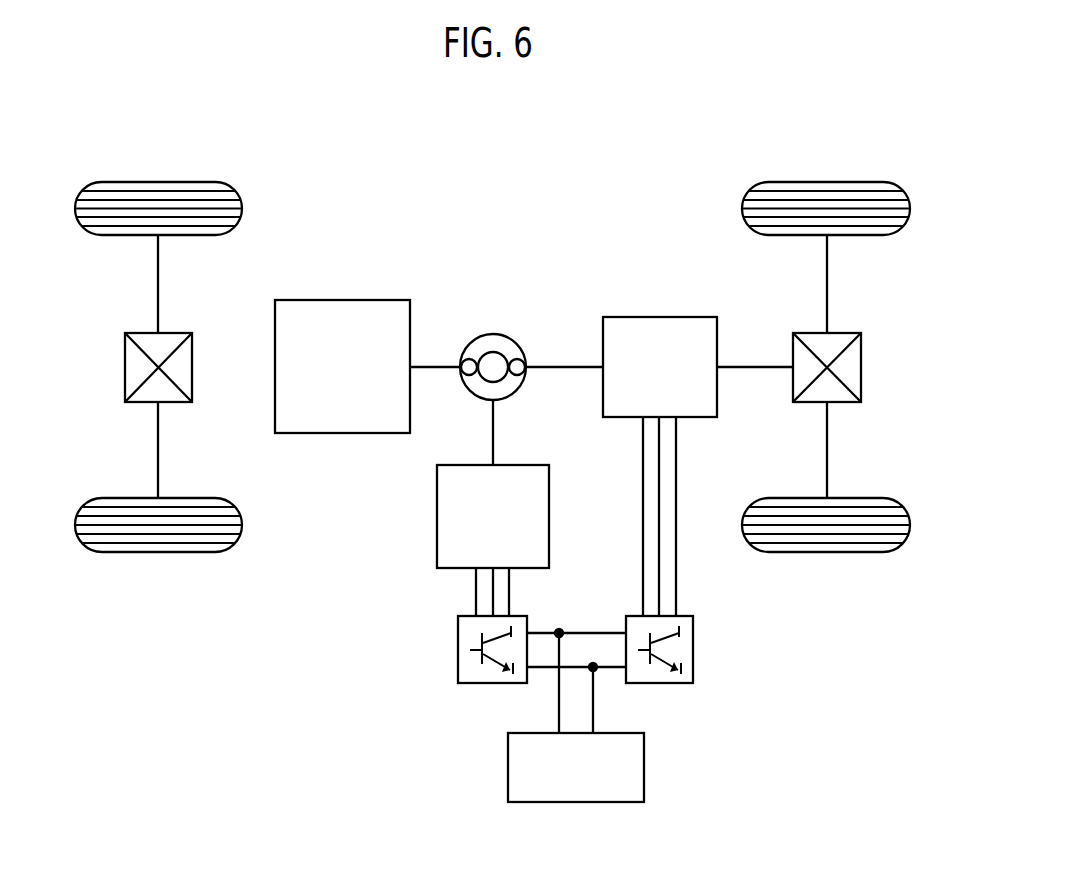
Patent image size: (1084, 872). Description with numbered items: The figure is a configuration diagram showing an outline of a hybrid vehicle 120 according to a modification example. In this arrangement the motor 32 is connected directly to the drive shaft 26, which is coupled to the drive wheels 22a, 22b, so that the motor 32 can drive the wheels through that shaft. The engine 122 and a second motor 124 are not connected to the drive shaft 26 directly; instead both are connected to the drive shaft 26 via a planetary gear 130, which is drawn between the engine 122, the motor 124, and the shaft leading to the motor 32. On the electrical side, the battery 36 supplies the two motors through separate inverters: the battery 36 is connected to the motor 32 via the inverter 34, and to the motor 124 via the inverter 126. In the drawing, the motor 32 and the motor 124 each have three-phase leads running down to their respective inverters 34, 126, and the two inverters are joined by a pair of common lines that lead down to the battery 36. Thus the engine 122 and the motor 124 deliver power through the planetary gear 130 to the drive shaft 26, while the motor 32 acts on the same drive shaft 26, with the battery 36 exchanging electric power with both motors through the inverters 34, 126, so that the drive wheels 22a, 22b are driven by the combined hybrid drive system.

The hybrid vehicle 120 is at (626, 149).
The engine 122 is at (340, 297).
The planetary gear 130 is at (494, 333).
The motor 32 is at (659, 315).
The drive shaft 26 is at (742, 363).
The drive wheel 22a is at (827, 180).
The drive wheel 22b is at (826, 555).
The motor 124 is at (437, 516).
The inverter 126 is at (458, 653).
The inverter 34 is at (694, 651).
The battery 36 is at (645, 768).